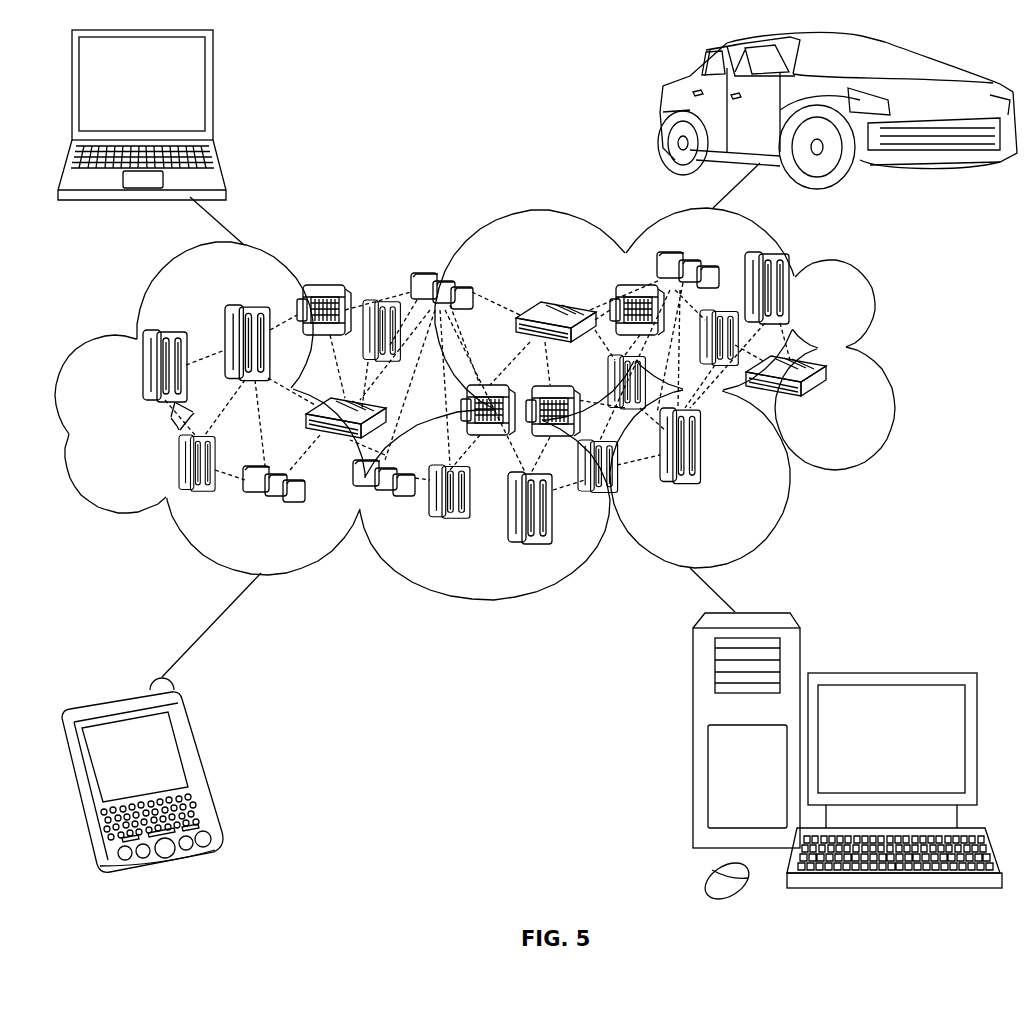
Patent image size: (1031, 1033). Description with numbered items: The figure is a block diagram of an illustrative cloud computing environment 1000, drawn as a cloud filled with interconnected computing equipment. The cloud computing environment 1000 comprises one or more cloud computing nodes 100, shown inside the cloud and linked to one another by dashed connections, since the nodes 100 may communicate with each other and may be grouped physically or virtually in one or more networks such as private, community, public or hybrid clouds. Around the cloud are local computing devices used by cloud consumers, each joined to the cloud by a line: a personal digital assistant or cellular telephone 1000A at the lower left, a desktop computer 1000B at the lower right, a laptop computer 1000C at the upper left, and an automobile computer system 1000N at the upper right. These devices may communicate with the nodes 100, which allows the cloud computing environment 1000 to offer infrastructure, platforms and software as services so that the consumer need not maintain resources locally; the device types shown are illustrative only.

The cloud computing environment 1000 is at (892, 375).
The cloud computing nodes 100 is at (829, 404).
The personal digital assistant (PDA) or cellular telephone 1000A is at (203, 770).
The desktop computer 1000B is at (888, 672).
The laptop computer 1000C is at (213, 95).
The automobile computer system 1000N is at (662, 110).